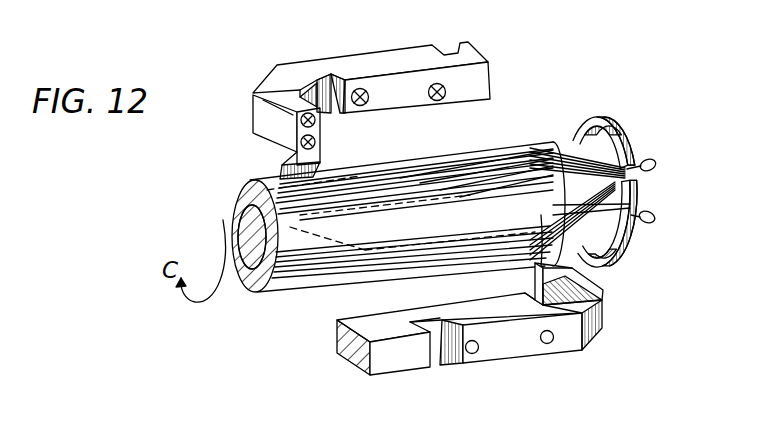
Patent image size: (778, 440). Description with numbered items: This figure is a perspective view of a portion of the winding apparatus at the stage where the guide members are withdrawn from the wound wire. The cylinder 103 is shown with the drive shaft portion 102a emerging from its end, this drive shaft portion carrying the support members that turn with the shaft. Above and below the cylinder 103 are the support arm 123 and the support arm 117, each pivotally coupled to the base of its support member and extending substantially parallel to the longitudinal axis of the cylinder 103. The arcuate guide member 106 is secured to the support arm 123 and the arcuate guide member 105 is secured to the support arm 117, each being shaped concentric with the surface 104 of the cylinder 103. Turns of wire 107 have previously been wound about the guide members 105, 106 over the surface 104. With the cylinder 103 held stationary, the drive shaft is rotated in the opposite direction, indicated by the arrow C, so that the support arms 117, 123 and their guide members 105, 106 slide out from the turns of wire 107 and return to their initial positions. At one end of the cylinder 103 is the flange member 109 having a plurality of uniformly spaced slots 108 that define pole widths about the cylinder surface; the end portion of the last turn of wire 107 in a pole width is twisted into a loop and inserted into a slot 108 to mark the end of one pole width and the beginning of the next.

The drive shaft portion 102a is at (243, 283).
The cylinder 103 is at (260, 292).
The surface 104 is at (313, 283).
The guide member 105 is at (600, 278).
The guide member 106 is at (270, 172).
The wire 107 is at (572, 142).
The slot 108 is at (632, 168).
The flange member 109 is at (588, 125).
The support arm 117 is at (502, 357).
The support arm 123 is at (324, 62).